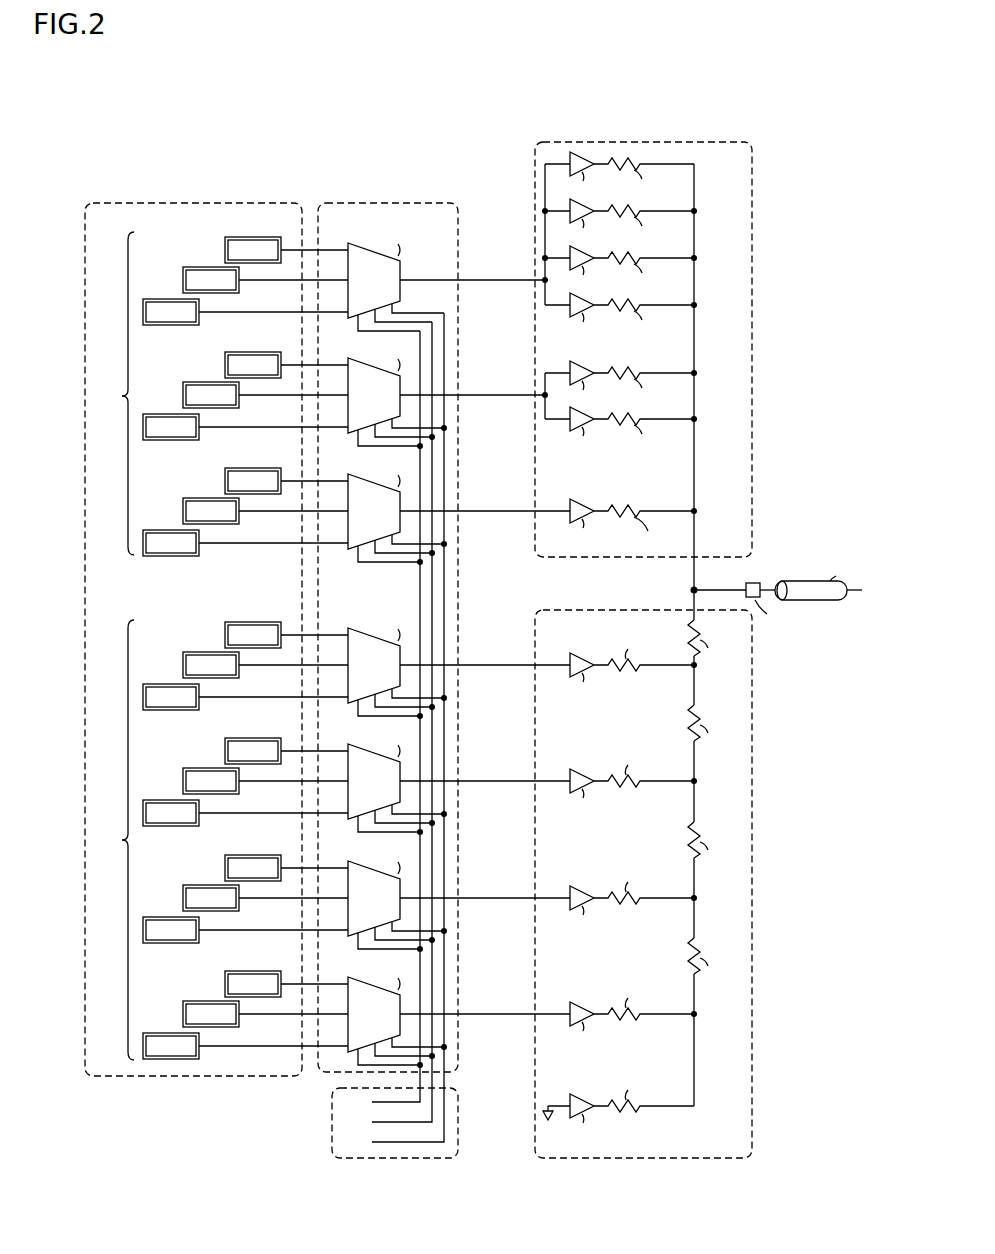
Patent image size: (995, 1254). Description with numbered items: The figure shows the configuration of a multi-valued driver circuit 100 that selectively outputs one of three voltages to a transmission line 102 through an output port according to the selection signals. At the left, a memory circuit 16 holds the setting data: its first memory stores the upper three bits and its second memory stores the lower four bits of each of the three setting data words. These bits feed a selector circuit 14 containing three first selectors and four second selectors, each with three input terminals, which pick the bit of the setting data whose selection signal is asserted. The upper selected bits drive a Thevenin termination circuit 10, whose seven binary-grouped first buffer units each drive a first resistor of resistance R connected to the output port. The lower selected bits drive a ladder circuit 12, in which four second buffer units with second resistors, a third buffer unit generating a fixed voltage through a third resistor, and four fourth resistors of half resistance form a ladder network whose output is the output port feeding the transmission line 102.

The multi-valued driver circuit 100 is at (796, 94).
The Thevenin termination circuit 10 is at (592, 143).
The R-2R ladder circuit 12 is at (752, 935).
The selector circuit 14 is at (398, 203).
The memory circuit 16 is at (236, 203).
The transmission line 102 is at (826, 602).